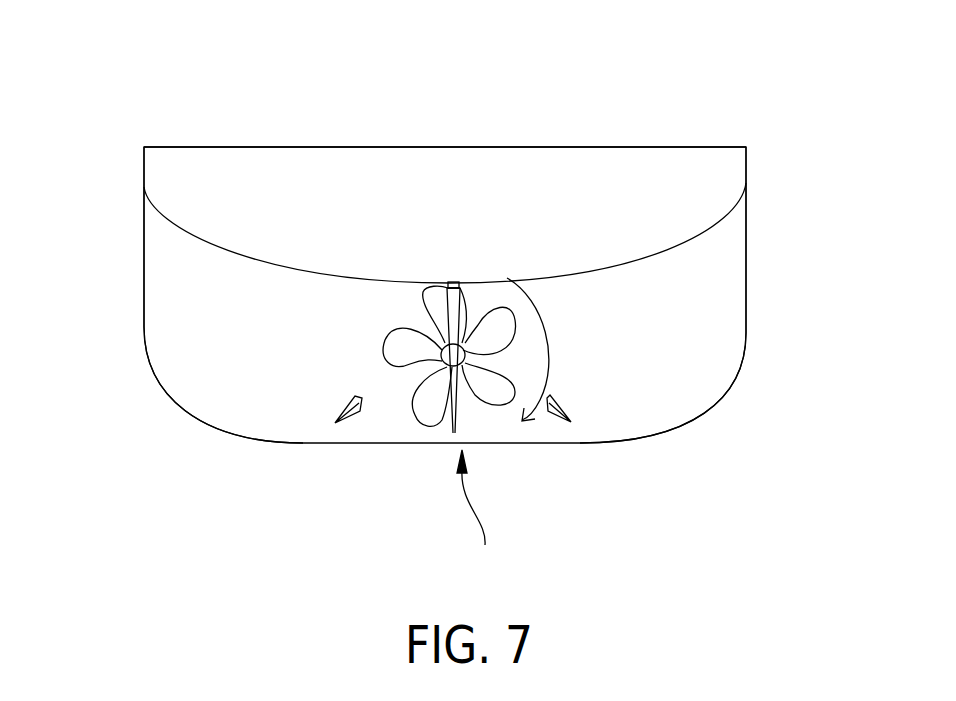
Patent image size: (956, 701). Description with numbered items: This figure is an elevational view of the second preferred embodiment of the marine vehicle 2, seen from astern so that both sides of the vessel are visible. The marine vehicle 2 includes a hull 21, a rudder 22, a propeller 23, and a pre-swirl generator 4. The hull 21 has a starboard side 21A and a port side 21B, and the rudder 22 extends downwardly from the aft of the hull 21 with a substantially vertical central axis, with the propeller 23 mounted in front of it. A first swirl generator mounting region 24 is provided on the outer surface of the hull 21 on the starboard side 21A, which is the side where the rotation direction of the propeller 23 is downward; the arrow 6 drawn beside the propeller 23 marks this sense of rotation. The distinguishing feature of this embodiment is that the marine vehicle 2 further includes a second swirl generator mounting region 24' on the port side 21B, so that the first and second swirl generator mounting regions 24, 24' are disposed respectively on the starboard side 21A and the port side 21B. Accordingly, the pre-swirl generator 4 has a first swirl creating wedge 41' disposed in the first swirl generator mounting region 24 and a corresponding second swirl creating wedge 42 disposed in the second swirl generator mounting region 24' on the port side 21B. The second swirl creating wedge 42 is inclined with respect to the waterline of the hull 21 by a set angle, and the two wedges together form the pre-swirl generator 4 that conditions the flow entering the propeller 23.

The marine vehicle 2 is at (545, 125).
The hull 21 is at (143, 166).
The starboard side 21A is at (746, 230).
The port side 21B is at (143, 237).
The rudder 22 is at (464, 318).
The propeller 23 is at (408, 328).
The first swirl generator mounting region 24 is at (663, 415).
The second swirl generator mounting region 24' is at (223, 403).
The pre-swirl generator 4 is at (473, 514).
The first swirl creating wedge 41' is at (567, 451).
The second swirl creating wedge 42 is at (350, 423).
The rotation direction arrow 6 is at (547, 333).